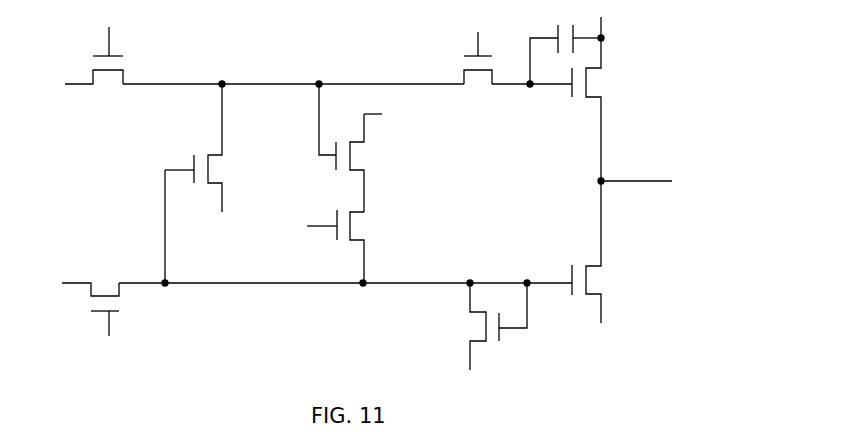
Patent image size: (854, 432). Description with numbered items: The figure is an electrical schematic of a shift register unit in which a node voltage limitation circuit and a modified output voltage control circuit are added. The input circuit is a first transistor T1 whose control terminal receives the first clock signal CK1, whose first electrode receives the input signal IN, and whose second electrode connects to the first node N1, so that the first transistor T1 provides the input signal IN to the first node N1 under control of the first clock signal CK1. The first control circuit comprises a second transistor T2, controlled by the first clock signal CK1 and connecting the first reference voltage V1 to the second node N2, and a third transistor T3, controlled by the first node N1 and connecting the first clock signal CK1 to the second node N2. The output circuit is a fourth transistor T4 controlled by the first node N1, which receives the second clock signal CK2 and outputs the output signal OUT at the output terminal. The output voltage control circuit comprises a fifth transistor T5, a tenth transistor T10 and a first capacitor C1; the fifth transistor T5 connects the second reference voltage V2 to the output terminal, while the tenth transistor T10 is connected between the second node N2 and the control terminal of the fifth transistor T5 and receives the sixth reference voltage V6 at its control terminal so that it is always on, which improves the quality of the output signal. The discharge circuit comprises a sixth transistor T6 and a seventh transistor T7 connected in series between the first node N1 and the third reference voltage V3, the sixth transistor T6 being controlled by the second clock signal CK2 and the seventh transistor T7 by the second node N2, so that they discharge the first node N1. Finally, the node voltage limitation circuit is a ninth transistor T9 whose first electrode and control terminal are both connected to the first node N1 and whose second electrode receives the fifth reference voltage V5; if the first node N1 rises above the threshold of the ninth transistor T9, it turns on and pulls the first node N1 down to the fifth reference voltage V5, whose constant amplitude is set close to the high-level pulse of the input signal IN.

The first transistor T1 is at (90, 301).
The second transistor T2 is at (94, 66).
The third transistor T3 is at (196, 183).
The fourth transistor T4 is at (595, 252).
The fifth transistor T5 is at (555, 109).
The sixth transistor T6 is at (344, 246).
The seventh transistor T7 is at (350, 148).
The ninth transistor T9 is at (490, 326).
The tenth transistor T10 is at (478, 67).
The first capacitor C1 is at (567, 49).
The first node N1 is at (345, 289).
The second node N2 is at (293, 76).
The input signal IN is at (44, 286).
The output signal OUT is at (635, 172).
The first clock signal CK1 is at (163, 197).
The second clock signal CK2 is at (453, 276).
The first reference voltage V1 is at (53, 84).
The second reference voltage V2 is at (606, 19).
The third reference voltage V3 is at (400, 117).
The fifth reference voltage V5 is at (485, 366).
The sixth reference voltage V6 is at (478, 24).